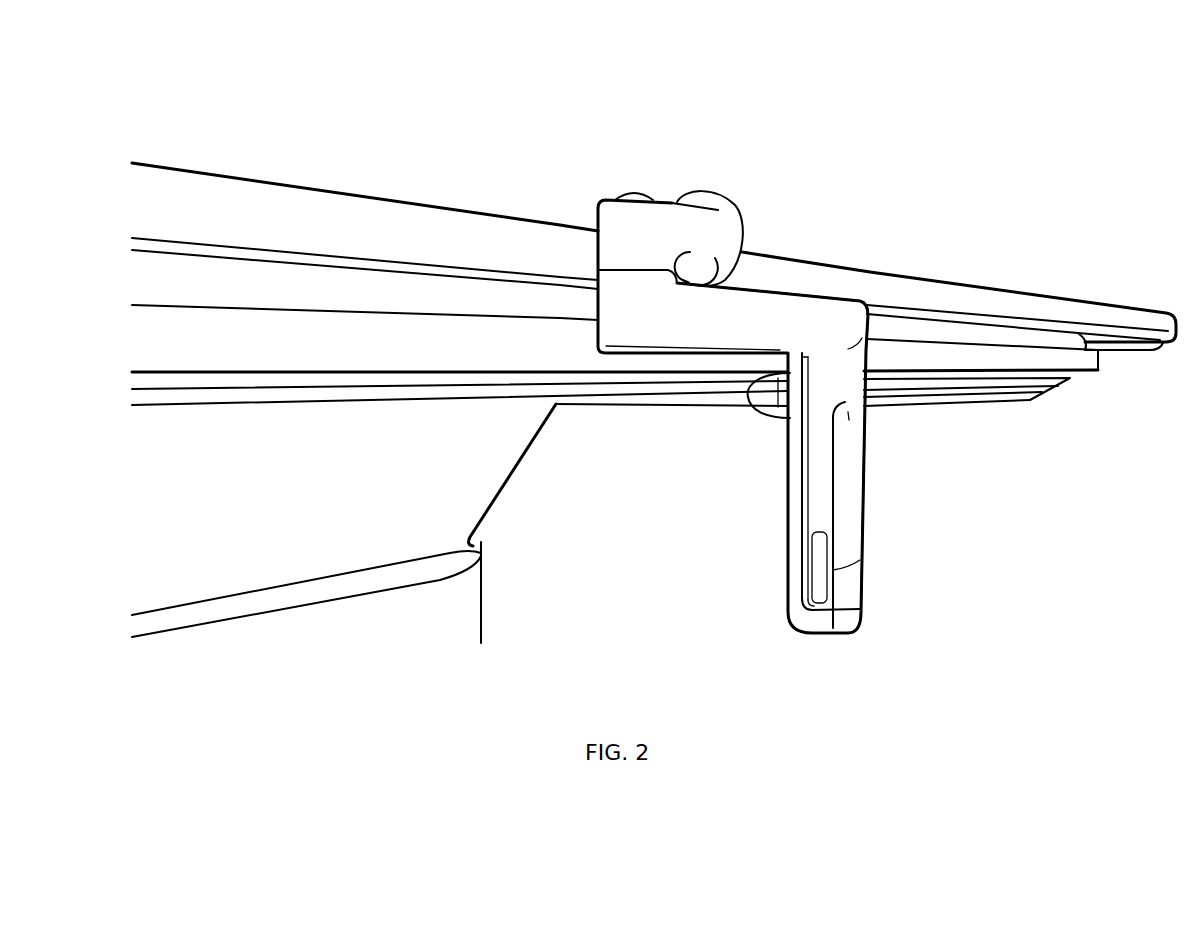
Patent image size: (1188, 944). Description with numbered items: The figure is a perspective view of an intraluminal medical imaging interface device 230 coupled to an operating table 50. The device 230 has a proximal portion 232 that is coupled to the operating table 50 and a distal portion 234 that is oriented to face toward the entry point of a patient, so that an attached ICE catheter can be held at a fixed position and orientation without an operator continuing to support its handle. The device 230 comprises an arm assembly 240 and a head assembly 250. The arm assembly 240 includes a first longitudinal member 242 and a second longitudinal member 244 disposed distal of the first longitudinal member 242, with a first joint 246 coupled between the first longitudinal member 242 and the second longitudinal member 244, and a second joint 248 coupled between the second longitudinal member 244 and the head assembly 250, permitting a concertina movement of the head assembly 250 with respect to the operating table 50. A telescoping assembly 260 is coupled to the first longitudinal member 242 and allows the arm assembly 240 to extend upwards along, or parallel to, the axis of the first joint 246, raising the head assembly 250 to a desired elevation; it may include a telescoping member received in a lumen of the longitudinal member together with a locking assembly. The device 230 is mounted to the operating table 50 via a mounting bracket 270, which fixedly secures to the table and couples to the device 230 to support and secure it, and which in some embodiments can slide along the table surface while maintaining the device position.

The operating table 50 is at (902, 355).
The intraluminal medical imaging interface device 230 is at (850, 108).
The proximal portion 232 is at (778, 522).
The distal portion 234 is at (715, 186).
The arm assembly 240 is at (761, 301).
The first longitudinal member 242 is at (770, 408).
The second longitudinal member 244 is at (833, 317).
The first joint 246 is at (870, 317).
The second joint 248 is at (622, 268).
The head assembly 250 is at (633, 184).
The telescoping assembly 260 is at (876, 568).
The mounting bracket 270 is at (790, 538).